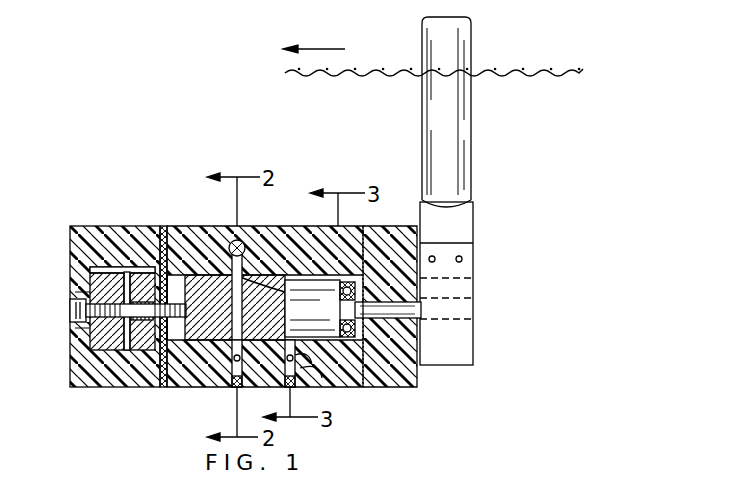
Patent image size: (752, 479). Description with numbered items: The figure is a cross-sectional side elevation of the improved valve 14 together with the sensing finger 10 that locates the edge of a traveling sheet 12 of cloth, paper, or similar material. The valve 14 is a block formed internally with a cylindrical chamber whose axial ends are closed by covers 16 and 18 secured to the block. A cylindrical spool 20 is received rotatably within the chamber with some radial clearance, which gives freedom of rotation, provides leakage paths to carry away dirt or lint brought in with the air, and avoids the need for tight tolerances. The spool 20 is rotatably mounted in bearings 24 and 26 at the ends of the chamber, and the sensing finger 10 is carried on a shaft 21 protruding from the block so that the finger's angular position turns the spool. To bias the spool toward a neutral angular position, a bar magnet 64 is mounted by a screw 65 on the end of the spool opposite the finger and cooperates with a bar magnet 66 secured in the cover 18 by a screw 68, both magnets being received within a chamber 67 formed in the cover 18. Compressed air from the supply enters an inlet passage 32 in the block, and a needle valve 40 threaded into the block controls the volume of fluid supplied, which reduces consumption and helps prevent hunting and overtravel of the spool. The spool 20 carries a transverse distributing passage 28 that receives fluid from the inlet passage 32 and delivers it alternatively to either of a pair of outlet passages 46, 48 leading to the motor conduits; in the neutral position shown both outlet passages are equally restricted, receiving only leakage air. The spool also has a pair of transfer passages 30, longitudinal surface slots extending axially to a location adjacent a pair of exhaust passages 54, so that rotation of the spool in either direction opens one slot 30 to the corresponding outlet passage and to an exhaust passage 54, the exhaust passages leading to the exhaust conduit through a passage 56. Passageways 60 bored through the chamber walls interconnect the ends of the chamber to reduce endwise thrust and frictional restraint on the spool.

The sensing finger 10 is at (458, 184).
The sheet 12 is at (524, 75).
The valve 14 is at (210, 232).
The cover 16 is at (412, 381).
The cover 18 is at (80, 382).
The spool 20 is at (298, 268).
The shaft 21 is at (425, 308).
The bearing 24 is at (365, 323).
The bearing 26 is at (167, 388).
The transverse distributing passage 28 is at (194, 388).
The transfer passages 30 is at (312, 308).
The inlet passage 32 is at (268, 232).
The needle valve 40 is at (229, 240).
The outlet passage 46 is at (235, 388).
The outlet passage 48 is at (280, 388).
The exhaust passages 54 is at (298, 380).
The passage 56 is at (318, 378).
The passageways 60 is at (180, 262).
The bar magnet 64 is at (107, 387).
The screw 65 is at (132, 318).
The bar magnet 66 is at (95, 343).
The chamber 67 is at (90, 388).
The screw 68 is at (72, 313).